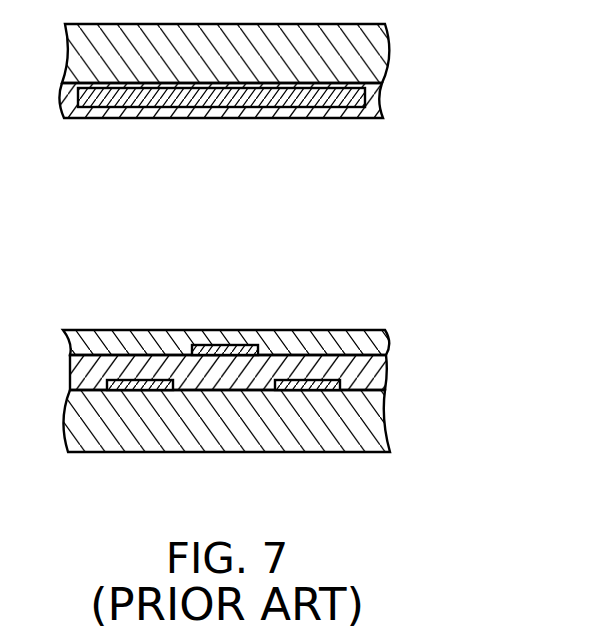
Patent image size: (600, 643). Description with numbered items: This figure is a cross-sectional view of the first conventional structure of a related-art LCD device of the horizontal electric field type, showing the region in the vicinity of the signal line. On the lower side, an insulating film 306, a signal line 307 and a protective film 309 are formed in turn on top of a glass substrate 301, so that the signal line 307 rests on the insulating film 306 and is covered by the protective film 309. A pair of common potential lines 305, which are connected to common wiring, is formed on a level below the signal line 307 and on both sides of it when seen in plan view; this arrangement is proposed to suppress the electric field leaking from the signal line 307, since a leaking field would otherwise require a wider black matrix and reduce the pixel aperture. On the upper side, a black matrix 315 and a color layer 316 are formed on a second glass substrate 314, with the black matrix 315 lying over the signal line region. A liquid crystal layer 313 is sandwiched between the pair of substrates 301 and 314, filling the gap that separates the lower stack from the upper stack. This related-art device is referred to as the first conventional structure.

The glass substrate 301 is at (373, 428).
The common potential lines 305 is at (147, 392).
The insulating film 306 is at (382, 378).
The signal line 307 is at (223, 345).
The protective film 309 is at (378, 343).
The liquid crystal layer 313 is at (397, 127).
The glass substrate 314 is at (378, 50).
The black matrix 315 is at (283, 108).
The color layer 316 is at (380, 95).